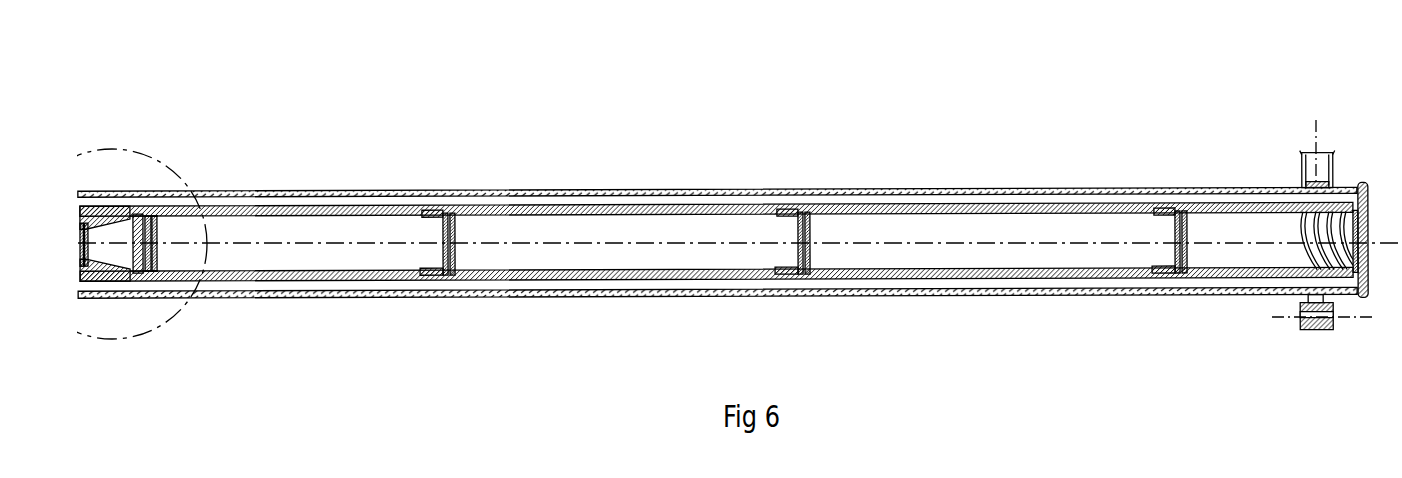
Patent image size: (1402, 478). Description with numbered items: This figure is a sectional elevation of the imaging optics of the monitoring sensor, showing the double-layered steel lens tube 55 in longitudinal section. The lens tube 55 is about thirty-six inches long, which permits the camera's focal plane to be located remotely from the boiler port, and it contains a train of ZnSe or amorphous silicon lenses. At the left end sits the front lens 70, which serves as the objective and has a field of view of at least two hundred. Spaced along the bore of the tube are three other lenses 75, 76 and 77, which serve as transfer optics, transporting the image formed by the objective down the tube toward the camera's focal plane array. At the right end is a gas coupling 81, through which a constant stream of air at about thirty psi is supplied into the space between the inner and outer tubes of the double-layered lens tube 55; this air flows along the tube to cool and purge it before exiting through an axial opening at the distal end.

The double-layered steel lens tube 55 is at (625, 192).
The front lens 70 is at (183, 229).
The lens 75 is at (443, 234).
The lens 76 is at (810, 236).
The lens 77 is at (1172, 232).
The gas coupling 81 is at (1335, 167).